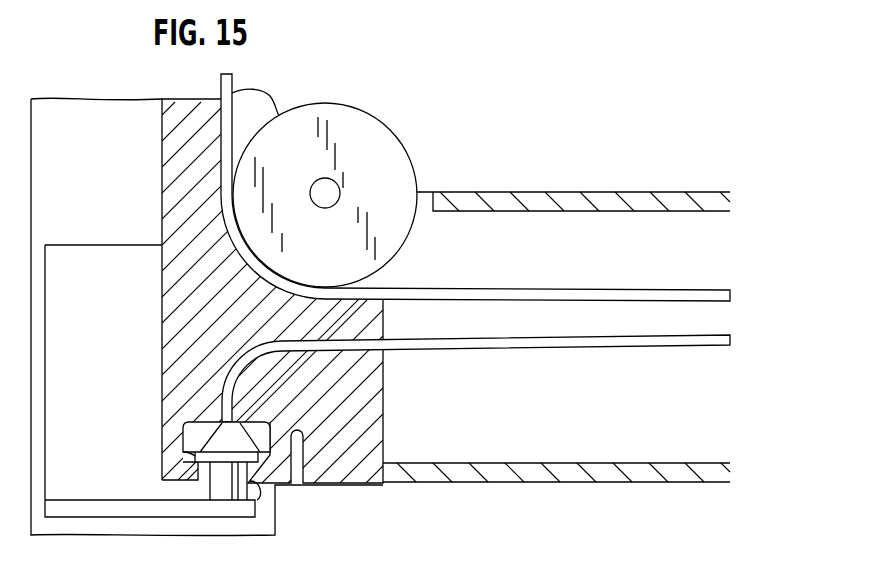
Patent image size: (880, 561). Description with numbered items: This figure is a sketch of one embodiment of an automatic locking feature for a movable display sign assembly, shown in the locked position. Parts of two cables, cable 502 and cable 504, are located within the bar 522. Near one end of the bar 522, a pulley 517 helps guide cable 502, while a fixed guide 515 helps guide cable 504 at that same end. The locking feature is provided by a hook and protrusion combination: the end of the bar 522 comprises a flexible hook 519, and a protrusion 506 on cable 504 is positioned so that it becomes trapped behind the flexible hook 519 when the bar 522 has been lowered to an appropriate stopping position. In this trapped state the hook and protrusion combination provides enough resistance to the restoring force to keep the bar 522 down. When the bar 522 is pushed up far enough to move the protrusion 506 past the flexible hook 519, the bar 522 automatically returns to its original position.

The pulley 517 is at (416, 163).
The bar 522 is at (567, 191).
The cable 502 is at (542, 289).
The cable 504 is at (525, 349).
The fixed guide 515 is at (362, 490).
The protrusion 506 is at (183, 440).
The flexible hook 519 is at (197, 490).